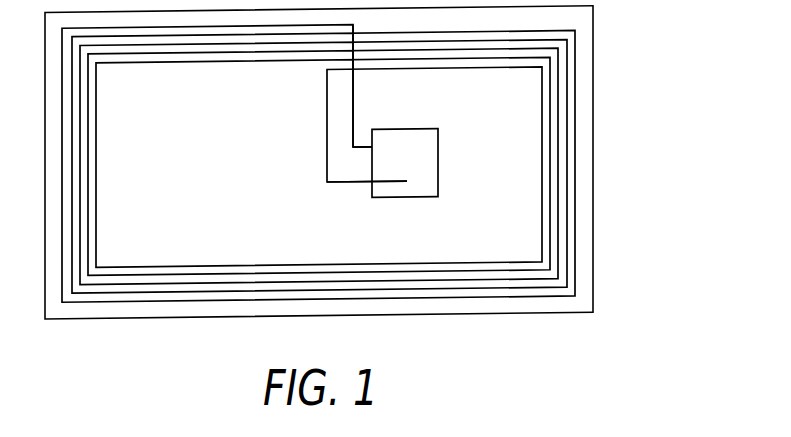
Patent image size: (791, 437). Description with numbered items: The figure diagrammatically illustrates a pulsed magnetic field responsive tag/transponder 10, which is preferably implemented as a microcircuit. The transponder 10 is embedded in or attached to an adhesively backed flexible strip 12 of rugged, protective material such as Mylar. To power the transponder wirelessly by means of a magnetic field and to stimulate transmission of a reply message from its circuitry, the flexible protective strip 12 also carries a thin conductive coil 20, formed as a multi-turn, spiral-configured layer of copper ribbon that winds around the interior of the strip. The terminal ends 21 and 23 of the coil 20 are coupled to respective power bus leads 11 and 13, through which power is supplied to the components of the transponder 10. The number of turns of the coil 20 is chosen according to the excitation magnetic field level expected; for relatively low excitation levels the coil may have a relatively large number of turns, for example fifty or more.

The tag/transponder 10 is at (440, 189).
The power bus lead 11 is at (372, 147).
The flexible strip 12 is at (593, 33).
The power bus lead 13 is at (398, 198).
The conductive coil 20 is at (96, 197).
The terminal end 21 is at (364, 146).
The terminal end 23 is at (364, 184).